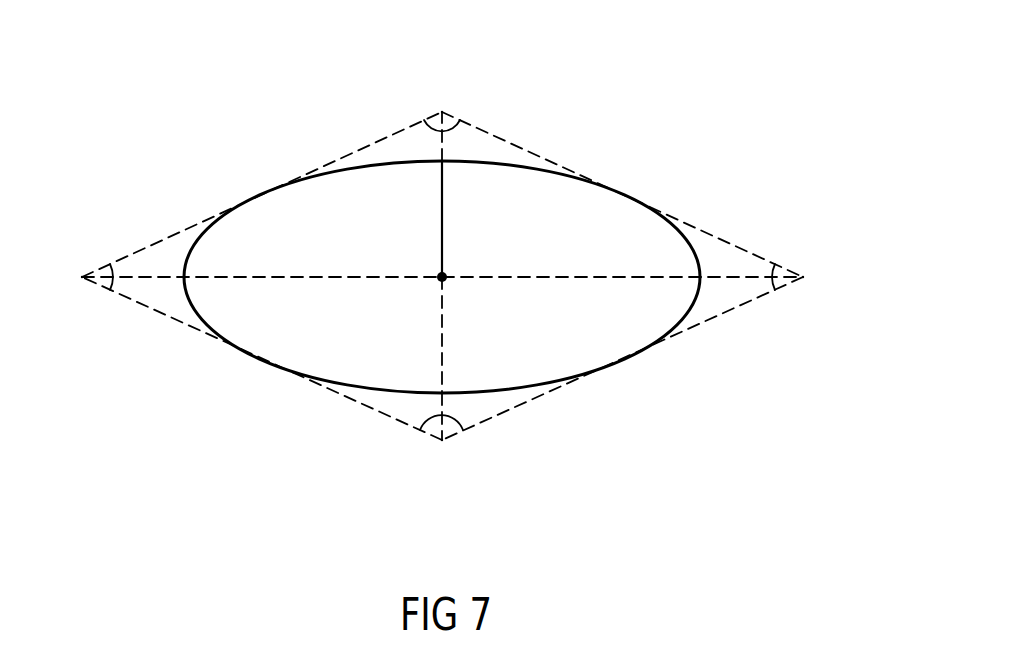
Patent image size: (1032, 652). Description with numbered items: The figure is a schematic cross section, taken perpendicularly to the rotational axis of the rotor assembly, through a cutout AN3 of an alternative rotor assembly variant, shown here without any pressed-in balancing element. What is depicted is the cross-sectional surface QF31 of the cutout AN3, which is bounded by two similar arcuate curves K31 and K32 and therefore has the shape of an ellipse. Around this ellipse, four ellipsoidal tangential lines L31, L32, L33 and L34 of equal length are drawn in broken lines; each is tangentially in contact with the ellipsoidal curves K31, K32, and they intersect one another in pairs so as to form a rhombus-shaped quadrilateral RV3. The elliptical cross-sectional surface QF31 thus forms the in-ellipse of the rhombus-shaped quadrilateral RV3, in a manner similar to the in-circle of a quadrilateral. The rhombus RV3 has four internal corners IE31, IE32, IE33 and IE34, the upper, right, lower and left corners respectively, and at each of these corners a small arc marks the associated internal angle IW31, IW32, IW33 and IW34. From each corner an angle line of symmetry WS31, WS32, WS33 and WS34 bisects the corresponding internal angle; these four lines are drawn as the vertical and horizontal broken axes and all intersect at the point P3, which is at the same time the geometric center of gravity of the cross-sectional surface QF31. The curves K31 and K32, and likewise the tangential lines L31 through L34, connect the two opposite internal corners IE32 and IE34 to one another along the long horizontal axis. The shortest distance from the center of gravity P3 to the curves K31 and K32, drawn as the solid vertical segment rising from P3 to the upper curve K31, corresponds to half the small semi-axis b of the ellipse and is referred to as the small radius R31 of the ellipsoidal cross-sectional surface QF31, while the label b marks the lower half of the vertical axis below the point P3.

The rhombus-shaped quadrilateral RV3 is at (452, 282).
The ellipsoidal tangential line L31 is at (543, 157).
The ellipsoidal tangential line L32 is at (703, 323).
The ellipsoidal tangential line L33 is at (353, 402).
The ellipsoidal tangential line L34 is at (335, 162).
The internal corner IE31 is at (443, 111).
The internal corner IE32 is at (800, 273).
The internal corner IE33 is at (441, 442).
The internal corner IE34 is at (83, 277).
The internal angle IW31 is at (412, 128).
The internal angle IW32 is at (765, 293).
The internal angle IW33 is at (468, 422).
The internal angle IW34 is at (114, 288).
The cross-sectional surface QF31 is at (478, 258).
The cutout AN3 is at (478, 258).
The arcuate curve K31 is at (493, 160).
The arcuate curve K32 is at (530, 388).
The angle line of symmetry WS31 is at (443, 140).
The angle line of symmetry WS32 is at (587, 278).
The angle line of symmetry WS33 is at (443, 373).
The angle line of symmetry WS34 is at (327, 278).
The small radius R31 is at (440, 200).
The small semi-axis b is at (441, 297).
The point P3 is at (445, 276).